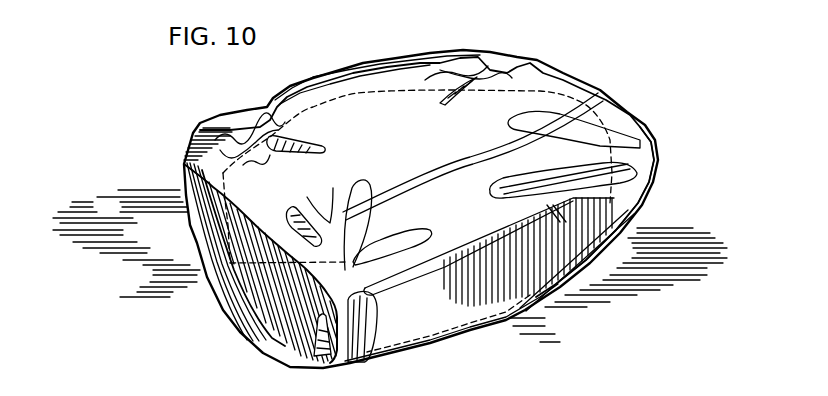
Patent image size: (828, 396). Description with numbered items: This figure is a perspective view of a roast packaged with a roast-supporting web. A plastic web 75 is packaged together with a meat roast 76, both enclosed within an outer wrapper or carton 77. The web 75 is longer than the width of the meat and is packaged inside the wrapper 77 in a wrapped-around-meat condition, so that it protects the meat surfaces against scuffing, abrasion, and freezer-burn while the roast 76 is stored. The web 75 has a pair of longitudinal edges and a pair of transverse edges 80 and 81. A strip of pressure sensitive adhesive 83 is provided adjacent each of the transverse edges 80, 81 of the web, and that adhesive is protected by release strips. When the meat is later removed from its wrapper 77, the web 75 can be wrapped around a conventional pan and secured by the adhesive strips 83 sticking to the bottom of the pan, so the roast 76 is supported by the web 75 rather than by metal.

The plastic web 75 is at (184, 164).
The meat roast 76 is at (520, 308).
The outer wrapper or carton 77 is at (643, 207).
The transverse edge 80 is at (200, 128).
The transverse edge 81 is at (186, 139).
The strip of pressure sensitive adhesive 83 is at (183, 152).